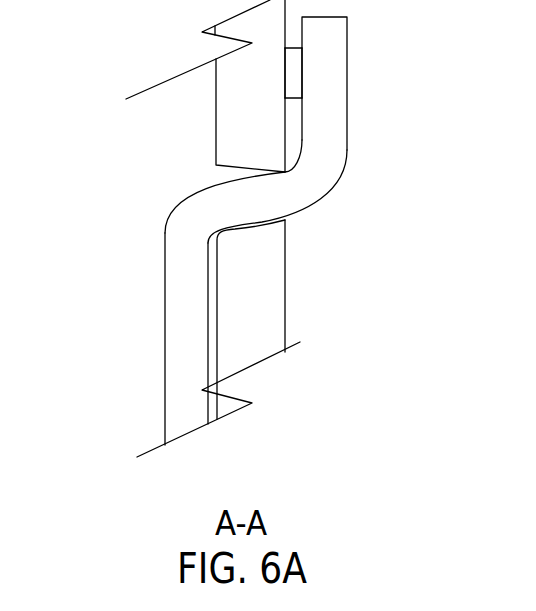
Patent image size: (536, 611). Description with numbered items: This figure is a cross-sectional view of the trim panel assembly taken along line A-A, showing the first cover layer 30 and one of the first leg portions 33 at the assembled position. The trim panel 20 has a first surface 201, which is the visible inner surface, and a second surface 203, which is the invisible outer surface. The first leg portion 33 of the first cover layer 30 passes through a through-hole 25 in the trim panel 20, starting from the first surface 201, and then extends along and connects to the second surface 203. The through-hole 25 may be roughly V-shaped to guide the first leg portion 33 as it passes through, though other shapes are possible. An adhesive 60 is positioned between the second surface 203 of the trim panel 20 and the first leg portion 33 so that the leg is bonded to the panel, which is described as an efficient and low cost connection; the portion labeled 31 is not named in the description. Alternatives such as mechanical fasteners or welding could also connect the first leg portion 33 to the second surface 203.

The trim panel 20 is at (243, 228).
The first surface 201 is at (215, 142).
The second surface 203 is at (287, 283).
The through-hole 25 is at (230, 177).
The first cover layer 30 is at (250, 231).
The lower pipe portion 31 is at (183, 317).
The first leg portion 33 is at (325, 73).
The adhesive 60 is at (292, 87).